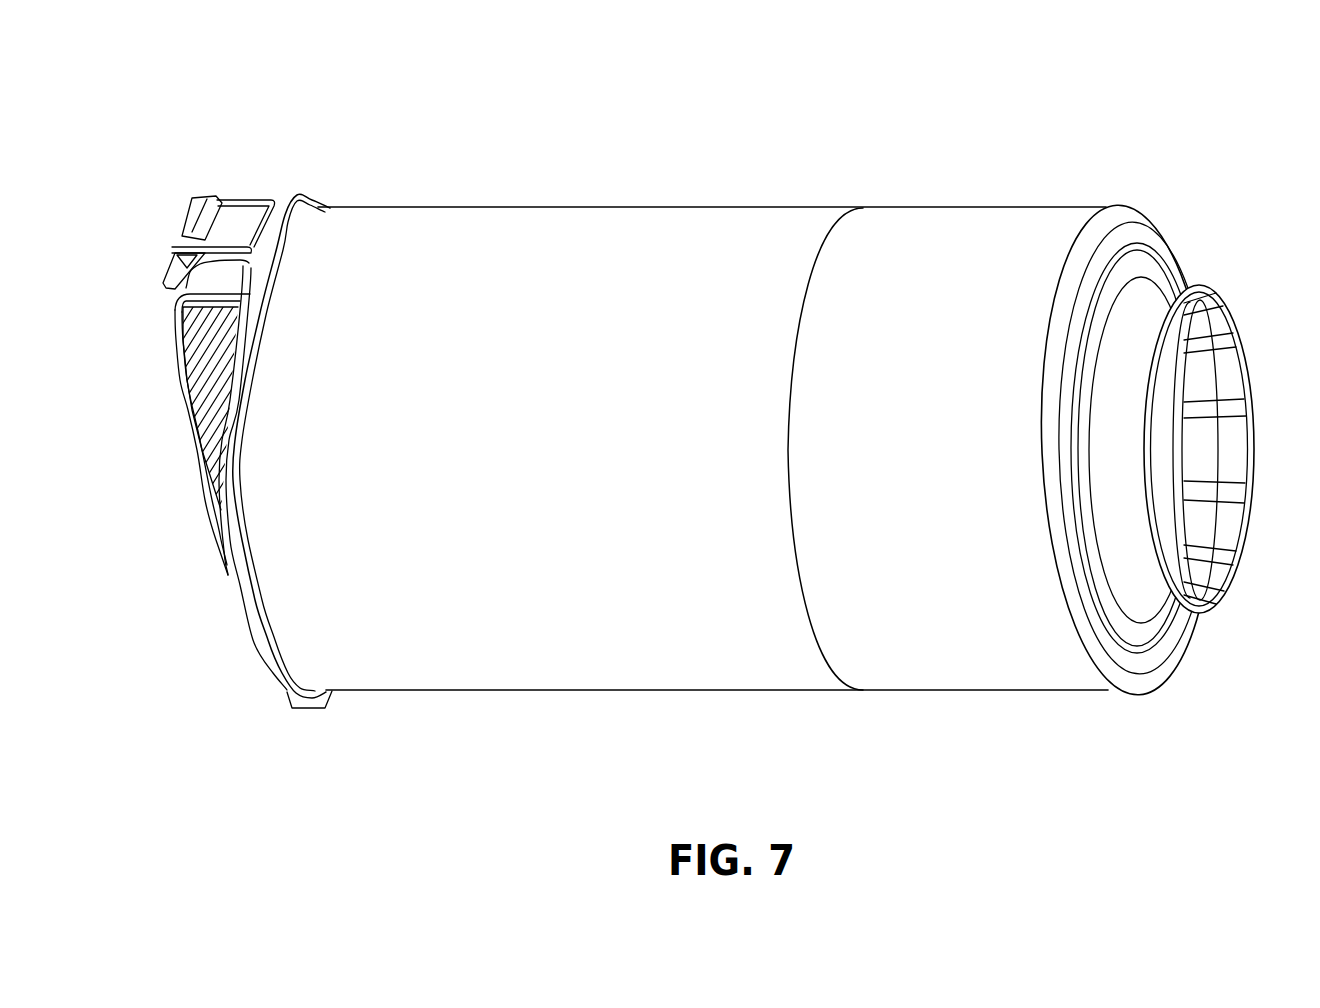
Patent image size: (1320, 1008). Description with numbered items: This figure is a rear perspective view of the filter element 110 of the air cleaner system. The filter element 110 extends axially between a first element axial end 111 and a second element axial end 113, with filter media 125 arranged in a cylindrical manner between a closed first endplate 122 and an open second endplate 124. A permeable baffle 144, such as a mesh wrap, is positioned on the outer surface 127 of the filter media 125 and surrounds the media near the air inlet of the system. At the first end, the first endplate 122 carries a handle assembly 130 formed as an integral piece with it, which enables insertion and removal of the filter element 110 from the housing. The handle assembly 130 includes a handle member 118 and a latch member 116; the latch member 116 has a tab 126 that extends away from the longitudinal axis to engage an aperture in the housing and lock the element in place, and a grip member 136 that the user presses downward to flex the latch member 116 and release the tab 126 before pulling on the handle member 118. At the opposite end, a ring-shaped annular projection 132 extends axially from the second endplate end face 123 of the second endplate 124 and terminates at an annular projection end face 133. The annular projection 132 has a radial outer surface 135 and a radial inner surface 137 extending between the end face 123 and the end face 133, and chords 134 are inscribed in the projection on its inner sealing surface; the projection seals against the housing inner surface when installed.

The filter element 110 is at (967, 104).
The first element axial end 111 is at (240, 690).
The second element axial end 113 is at (1212, 657).
The latch member 116 is at (182, 226).
The handle member 118 is at (185, 430).
The first endplate 122 is at (292, 196).
The second endplate end face 123 is at (1178, 258).
The second endplate 124 is at (1132, 208).
The filter media 125 is at (675, 235).
The tab 126 is at (214, 195).
The outer surface 127 is at (545, 207).
The handle assembly 130 is at (186, 527).
The annular projection 132 is at (1148, 287).
The annular projection end face 133 is at (1242, 594).
The chords 134 is at (1215, 518).
The radial outer surface 135 is at (1153, 595).
The grip member 136 is at (170, 270).
The radial inner surface 137 is at (1206, 381).
The permeable baffle 144 is at (1005, 222).